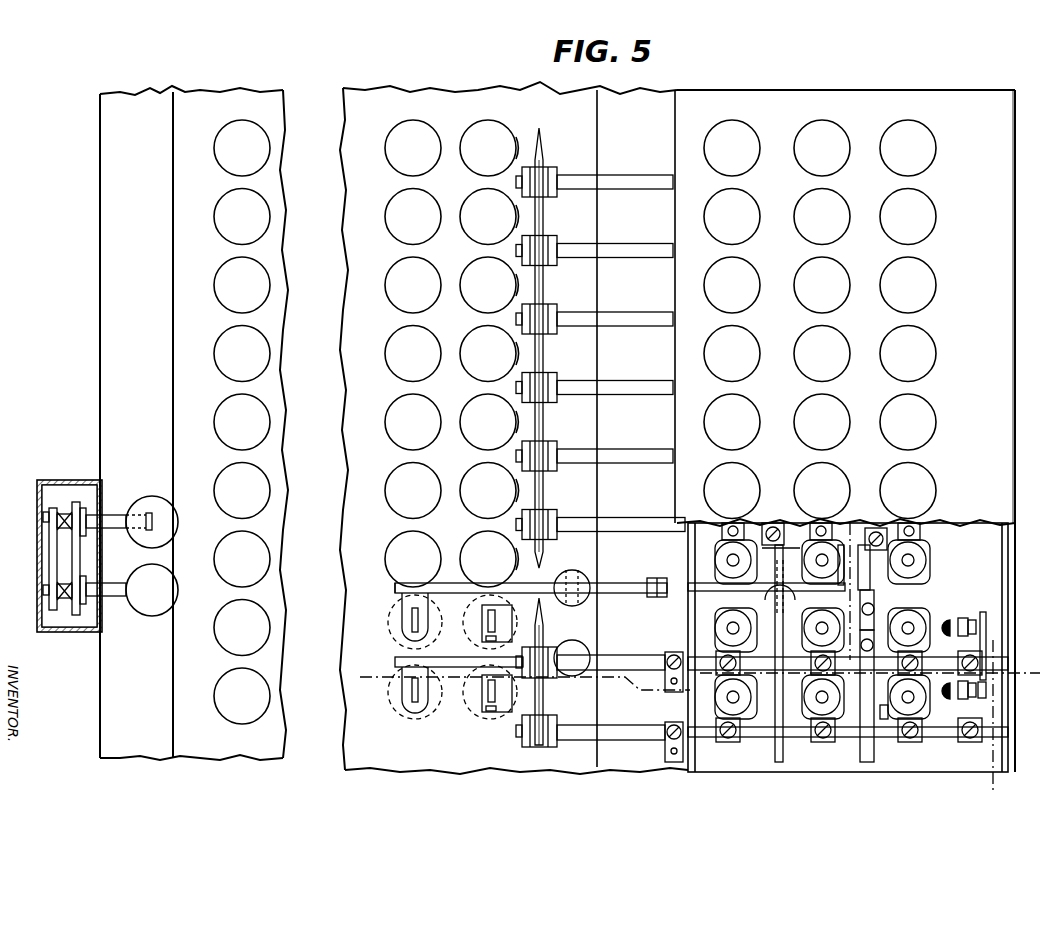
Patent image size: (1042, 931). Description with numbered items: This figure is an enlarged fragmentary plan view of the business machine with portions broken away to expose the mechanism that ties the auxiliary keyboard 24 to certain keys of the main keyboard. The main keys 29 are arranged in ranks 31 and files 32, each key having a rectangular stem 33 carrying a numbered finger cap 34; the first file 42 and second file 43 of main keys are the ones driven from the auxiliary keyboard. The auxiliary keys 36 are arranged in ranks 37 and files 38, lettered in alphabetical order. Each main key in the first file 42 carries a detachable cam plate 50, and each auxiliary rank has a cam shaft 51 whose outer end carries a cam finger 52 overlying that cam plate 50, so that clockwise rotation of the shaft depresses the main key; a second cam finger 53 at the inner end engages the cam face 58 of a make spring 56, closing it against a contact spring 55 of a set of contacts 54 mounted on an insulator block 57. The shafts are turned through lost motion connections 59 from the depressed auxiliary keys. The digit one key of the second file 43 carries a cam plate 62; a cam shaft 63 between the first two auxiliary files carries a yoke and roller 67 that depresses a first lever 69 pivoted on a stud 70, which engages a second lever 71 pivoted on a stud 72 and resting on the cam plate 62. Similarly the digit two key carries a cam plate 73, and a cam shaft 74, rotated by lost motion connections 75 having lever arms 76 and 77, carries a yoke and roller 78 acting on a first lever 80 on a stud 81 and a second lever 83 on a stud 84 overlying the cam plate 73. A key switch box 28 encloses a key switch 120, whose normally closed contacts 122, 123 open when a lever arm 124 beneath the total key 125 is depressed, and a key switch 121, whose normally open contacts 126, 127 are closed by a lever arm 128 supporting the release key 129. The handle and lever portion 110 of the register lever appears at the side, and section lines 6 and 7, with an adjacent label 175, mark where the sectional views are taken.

The section line 6- 6 is at (370, 683).
The section line 7- 7 is at (851, 509).
The auxiliary keyboard 24 is at (1018, 438).
The key switch box 28 is at (68, 503).
The main keys 29 is at (514, 428).
The ranks 31 is at (197, 150).
The files 32 is at (487, 90).
The rectangular stem 33 is at (484, 698).
The finger cap 34 is at (152, 498).
The auxiliary keys 36 is at (930, 340).
The ranks 37 is at (940, 150).
The files 38 is at (733, 112).
The first file of main keys 42 is at (490, 730).
The second file of main keys 43 is at (415, 730).
The cam plate 50 is at (556, 600).
The cam shaft 51 is at (640, 735).
The cam finger 52 is at (546, 628).
The cam finger 53 is at (982, 640).
The set of contacts 54 is at (963, 618).
The contact spring 55 is at (958, 622).
The make spring 56 is at (972, 618).
The insulator block 57 is at (996, 637).
The cam face 58 is at (983, 625).
The lost motion connection 59 is at (712, 612).
The cam plate 62 is at (395, 667).
The cam shaft 63 is at (775, 757).
The yoke and roller 67 is at (790, 668).
The first lever 69 is at (672, 652).
The stud 70 is at (712, 628).
The second lever 71 is at (423, 621).
The stud 72 is at (582, 658).
The cam plate 73 is at (395, 603).
The cam shaft 74 is at (860, 757).
The lost motion connection 75 is at (885, 713).
The lever arm 76 is at (874, 567).
The lever arm 77 is at (918, 543).
The yoke and roller 78 is at (885, 595).
The first lever 80 is at (803, 572).
The stud 81 is at (739, 572).
The second lever 83 is at (612, 582).
The stud 84 is at (562, 576).
The handle and lever portion 110 is at (1008, 580).
The key switch 120 is at (55, 505).
The key switch 121 is at (66, 628).
The contact 122 is at (46, 510).
The contact 123 is at (76, 505).
The lever arm 124 is at (115, 515).
The total key 125 is at (172, 510).
The contact 126 is at (64, 612).
The contact 127 is at (72, 612).
The lever arm 128 is at (118, 585).
The release key 129 is at (152, 612).
The screw 175 is at (884, 525).